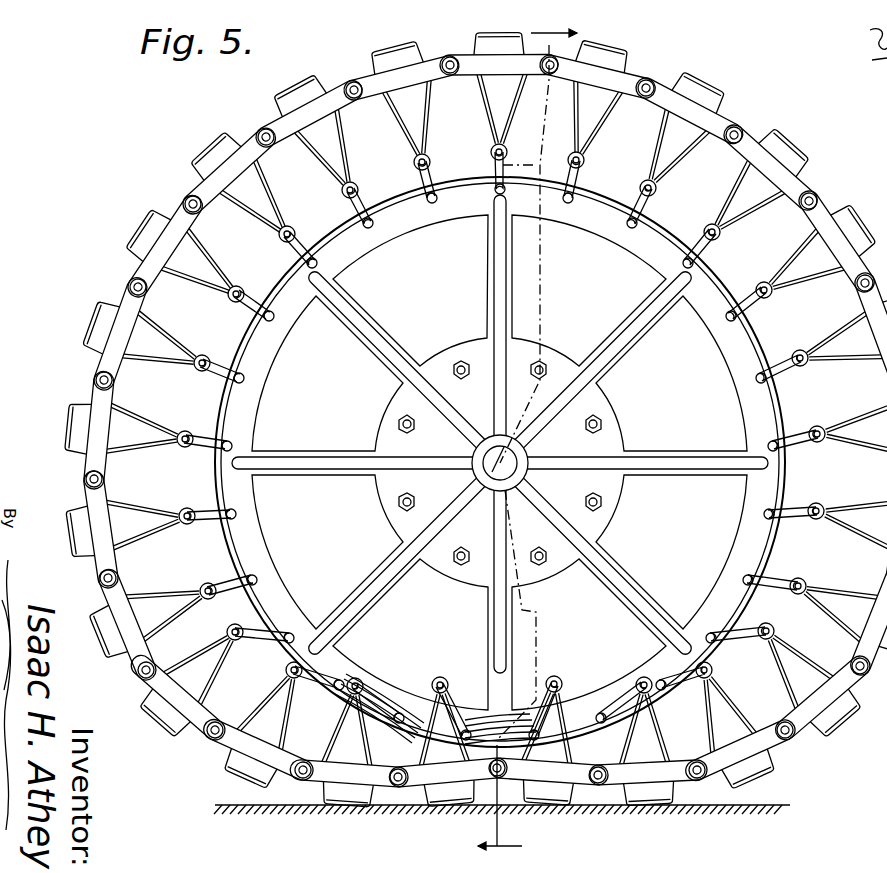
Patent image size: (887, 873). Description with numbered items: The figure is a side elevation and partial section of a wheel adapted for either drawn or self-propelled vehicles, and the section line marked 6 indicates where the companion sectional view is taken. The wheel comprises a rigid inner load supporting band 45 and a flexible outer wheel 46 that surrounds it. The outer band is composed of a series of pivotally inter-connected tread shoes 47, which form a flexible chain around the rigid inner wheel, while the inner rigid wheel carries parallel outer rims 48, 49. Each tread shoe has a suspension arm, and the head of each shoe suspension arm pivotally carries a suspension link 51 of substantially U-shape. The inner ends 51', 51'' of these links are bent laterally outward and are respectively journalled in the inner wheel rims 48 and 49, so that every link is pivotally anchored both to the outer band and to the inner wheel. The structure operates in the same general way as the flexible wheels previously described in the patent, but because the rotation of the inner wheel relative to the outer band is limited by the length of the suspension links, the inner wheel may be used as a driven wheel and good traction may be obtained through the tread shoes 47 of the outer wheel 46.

The section line 6- 6 is at (527, 437).
The rigid inner load supporting band 45 is at (447, 345).
The flexible outer wheel 46 is at (118, 266).
The tread shoe 47 is at (625, 735).
The outer rim 48 is at (672, 572).
The outer rim 49 is at (388, 690).
The suspension link 51 is at (507, 446).
The inner end of suspension link 51' is at (501, 419).
The inner end of suspension link 51'' is at (478, 700).